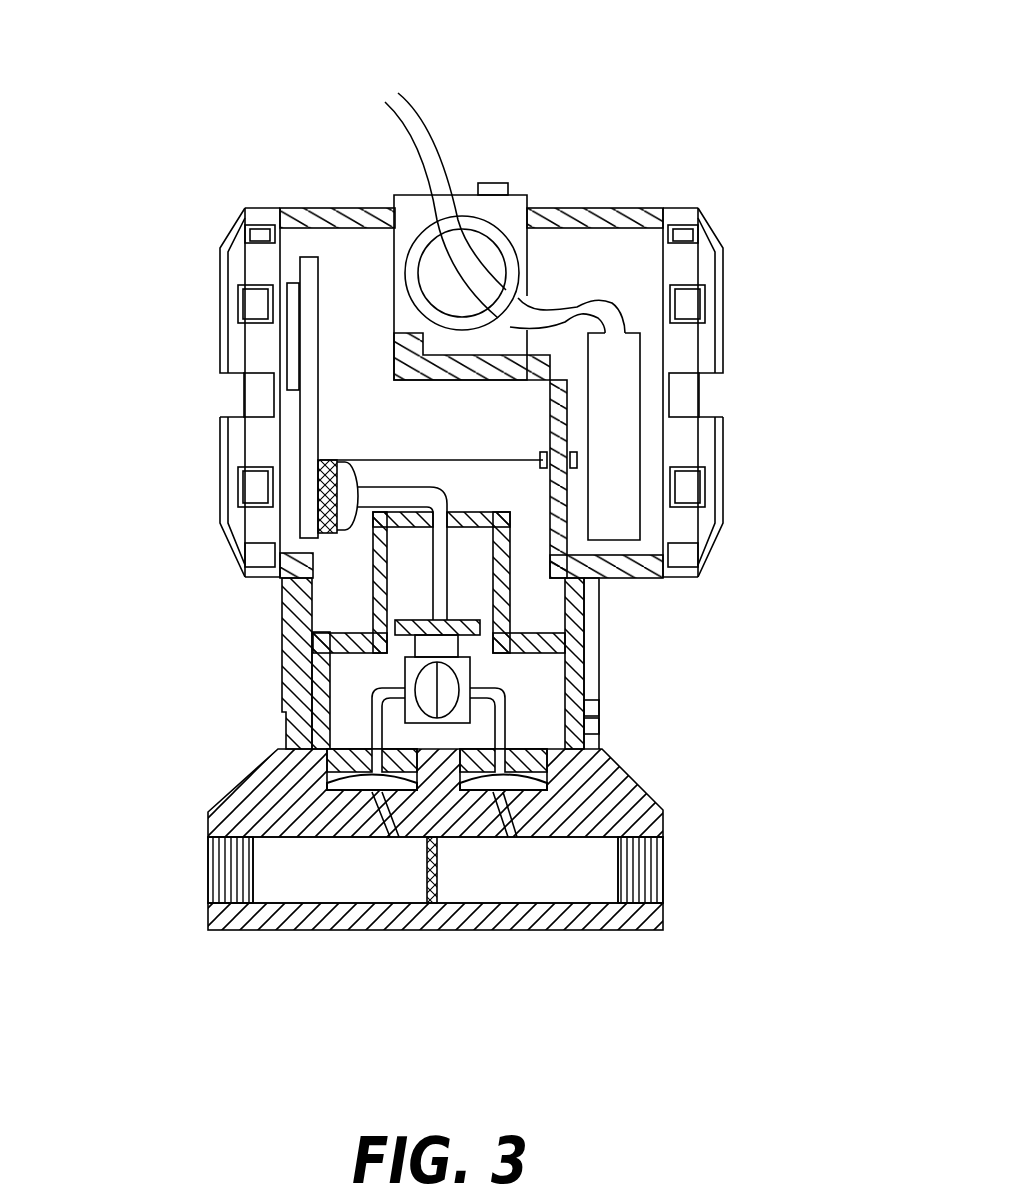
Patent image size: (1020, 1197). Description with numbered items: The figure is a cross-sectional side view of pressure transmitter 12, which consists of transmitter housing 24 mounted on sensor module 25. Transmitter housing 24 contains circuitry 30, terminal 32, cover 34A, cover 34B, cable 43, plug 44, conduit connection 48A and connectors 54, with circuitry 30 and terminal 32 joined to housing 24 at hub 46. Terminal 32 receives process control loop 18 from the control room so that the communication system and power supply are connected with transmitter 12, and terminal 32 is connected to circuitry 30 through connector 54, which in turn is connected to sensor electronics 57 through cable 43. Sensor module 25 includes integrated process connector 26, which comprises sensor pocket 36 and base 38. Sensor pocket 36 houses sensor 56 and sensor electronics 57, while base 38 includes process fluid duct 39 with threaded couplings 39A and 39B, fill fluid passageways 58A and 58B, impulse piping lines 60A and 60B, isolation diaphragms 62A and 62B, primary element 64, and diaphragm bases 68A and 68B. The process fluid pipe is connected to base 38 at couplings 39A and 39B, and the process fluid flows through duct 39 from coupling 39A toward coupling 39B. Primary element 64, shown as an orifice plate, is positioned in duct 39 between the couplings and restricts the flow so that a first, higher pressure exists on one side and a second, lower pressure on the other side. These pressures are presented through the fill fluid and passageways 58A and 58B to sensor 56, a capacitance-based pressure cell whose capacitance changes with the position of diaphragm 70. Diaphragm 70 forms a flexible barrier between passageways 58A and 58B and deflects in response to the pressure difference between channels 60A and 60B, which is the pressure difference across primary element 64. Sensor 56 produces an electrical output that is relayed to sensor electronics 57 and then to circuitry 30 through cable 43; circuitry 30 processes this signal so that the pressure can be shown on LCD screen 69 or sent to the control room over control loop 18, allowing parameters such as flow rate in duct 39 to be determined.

The pressure transmitter 12 is at (750, 173).
The process control loop 18 is at (437, 127).
The transmitter housing 24 is at (597, 207).
The sensor module 25 is at (167, 758).
The integrated process connector 26 is at (647, 780).
The circuitry 30 is at (313, 318).
The terminal 32 is at (614, 436).
The cover 34A is at (720, 360).
The cover 34B is at (240, 303).
The sensor pocket 36 is at (283, 675).
The base 38 is at (665, 830).
The process fluid duct 39 is at (667, 863).
The threaded coupling 39A is at (657, 897).
The threaded coupling 39B is at (210, 880).
The cable 43 is at (403, 490).
The plug 44 is at (322, 460).
The hub 46 is at (557, 510).
The conduit connection 48A is at (503, 210).
The connector 54 is at (455, 460).
The sensor 56 is at (470, 660).
The sensor electronics 57 is at (395, 625).
The fill fluid passageway 58A is at (505, 690).
The fill fluid passageway 58B is at (377, 700).
The impulse piping line 60A is at (547, 786).
The impulse piping line 60B is at (330, 785).
The isolation diaphragm 62A is at (540, 785).
The isolation diaphragm 62B is at (327, 798).
The primary element 64 is at (420, 893).
The diaphragm base 68A is at (530, 760).
The diaphragm base 68B is at (345, 713).
The LCD screen 69 is at (293, 340).
The diaphragm 70 is at (437, 680).